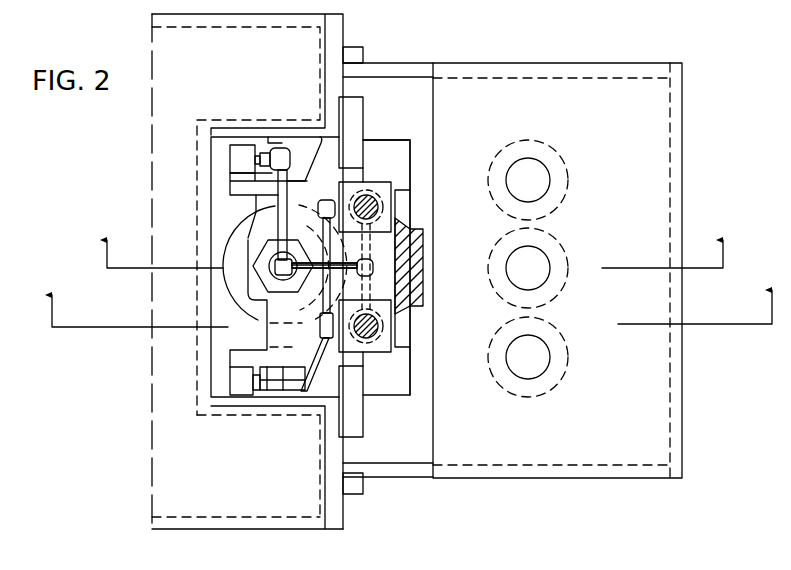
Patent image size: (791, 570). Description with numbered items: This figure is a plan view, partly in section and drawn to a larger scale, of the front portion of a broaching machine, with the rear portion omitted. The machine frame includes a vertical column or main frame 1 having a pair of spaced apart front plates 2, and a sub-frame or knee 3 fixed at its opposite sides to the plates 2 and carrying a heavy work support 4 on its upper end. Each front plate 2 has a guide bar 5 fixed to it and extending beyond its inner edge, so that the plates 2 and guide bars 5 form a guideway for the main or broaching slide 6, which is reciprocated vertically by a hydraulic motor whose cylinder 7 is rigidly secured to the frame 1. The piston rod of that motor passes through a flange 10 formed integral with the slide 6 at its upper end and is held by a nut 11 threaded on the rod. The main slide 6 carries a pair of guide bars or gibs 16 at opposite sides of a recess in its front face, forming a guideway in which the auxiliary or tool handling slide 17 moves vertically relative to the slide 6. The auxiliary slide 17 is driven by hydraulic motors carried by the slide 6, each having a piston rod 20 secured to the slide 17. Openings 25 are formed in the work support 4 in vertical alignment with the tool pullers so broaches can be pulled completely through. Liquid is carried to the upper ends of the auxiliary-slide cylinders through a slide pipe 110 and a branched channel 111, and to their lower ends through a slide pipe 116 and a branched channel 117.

The main frame 1 is at (218, 523).
The front plates 2 is at (343, 31).
The sub-frame or knee 3 is at (645, 488).
The work support 4 is at (636, 414).
The guide bar 5 is at (357, 113).
The main or broaching slide 6 is at (379, 148).
The cylinder 7 is at (263, 318).
The flange 10 is at (270, 313).
The nut 11 is at (272, 252).
The guide bars or gibs 16 is at (400, 212).
The auxiliary slide 17 is at (418, 249).
The piston rod 20 is at (366, 205).
The opening 25 is at (540, 178).
The slide pipe 110 is at (247, 388).
The branched channel 111 is at (300, 386).
The slide pipe 116 is at (240, 155).
The branched channel 117 is at (278, 206).